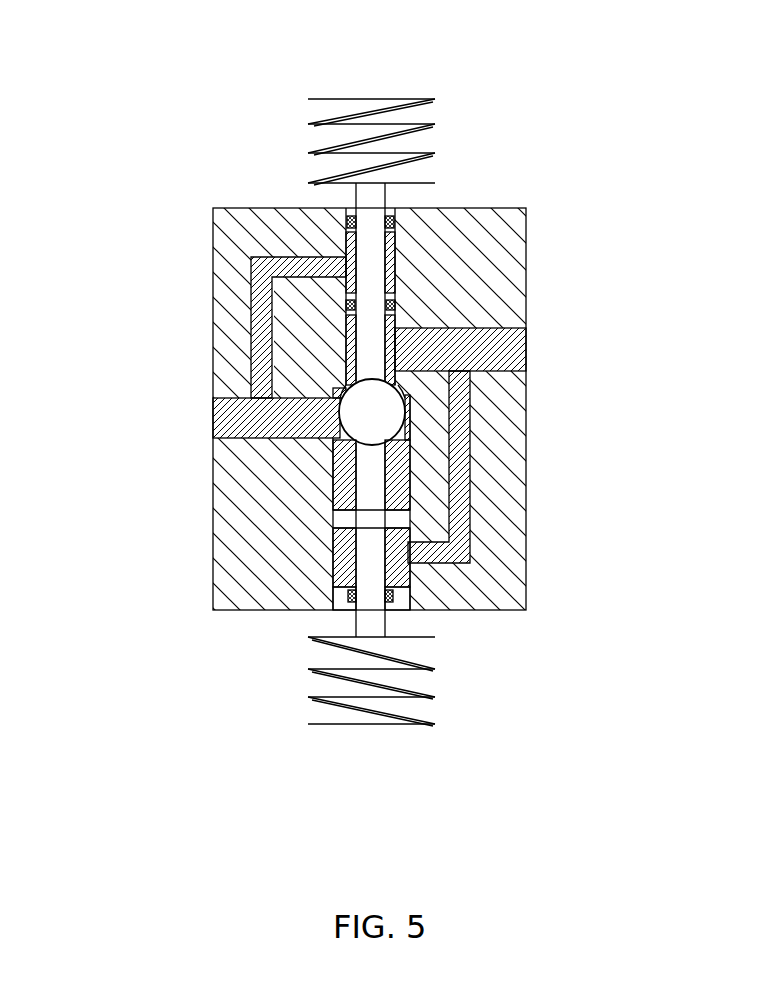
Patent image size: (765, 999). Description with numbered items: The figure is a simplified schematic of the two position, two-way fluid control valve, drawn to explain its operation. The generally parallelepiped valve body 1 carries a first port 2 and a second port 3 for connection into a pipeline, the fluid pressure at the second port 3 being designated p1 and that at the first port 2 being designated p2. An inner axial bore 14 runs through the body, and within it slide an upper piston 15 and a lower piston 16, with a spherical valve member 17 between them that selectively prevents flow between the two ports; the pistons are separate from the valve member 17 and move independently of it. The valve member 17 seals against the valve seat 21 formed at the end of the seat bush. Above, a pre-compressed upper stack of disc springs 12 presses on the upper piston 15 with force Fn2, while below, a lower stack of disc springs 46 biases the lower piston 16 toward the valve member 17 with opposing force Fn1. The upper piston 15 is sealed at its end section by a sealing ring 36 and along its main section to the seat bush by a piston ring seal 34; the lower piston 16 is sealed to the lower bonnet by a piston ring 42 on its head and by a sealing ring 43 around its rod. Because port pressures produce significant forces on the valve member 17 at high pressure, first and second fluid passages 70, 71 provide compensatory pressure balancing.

The valve body 1 is at (240, 468).
The first port 2 is at (520, 371).
The second port 3 is at (213, 433).
The upper stack of disc springs 12 is at (289, 145).
The inner axial bore 14 is at (390, 265).
The upper piston 15 is at (370, 326).
The lower piston 16 is at (372, 563).
The valve member 17 is at (388, 427).
The valve seat 21 is at (343, 388).
The piston ring seal 34 is at (394, 303).
The sealing ring 36 is at (394, 222).
The piston ring 42 is at (333, 520).
The sealing ring 43 is at (340, 590).
The lower stack of disc springs 46 is at (448, 688).
The first fluid passage 70 is at (468, 480).
The second fluid passage 71 is at (250, 325).
The lower spring force Fn1 is at (371, 736).
The upper spring force Fn2 is at (371, 88).
The fluid pressure at second port p1 is at (200, 420).
The fluid pressure at first port p2 is at (539, 350).